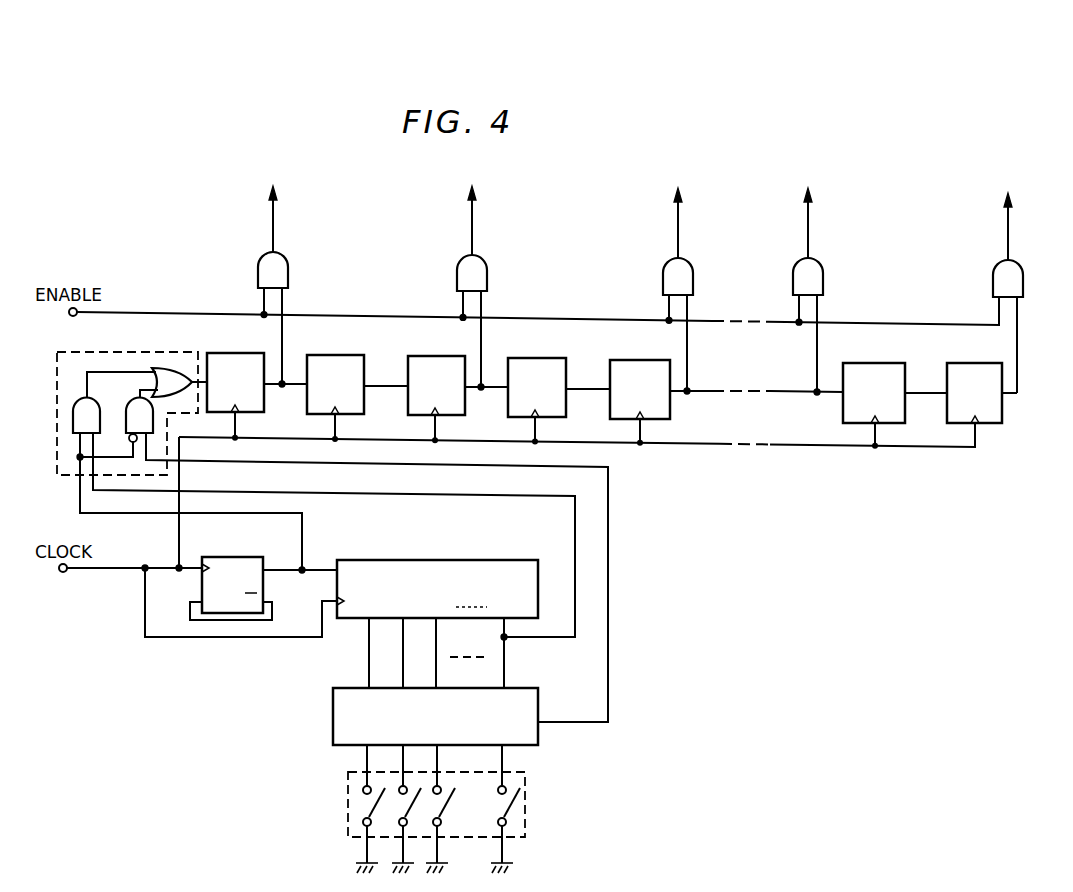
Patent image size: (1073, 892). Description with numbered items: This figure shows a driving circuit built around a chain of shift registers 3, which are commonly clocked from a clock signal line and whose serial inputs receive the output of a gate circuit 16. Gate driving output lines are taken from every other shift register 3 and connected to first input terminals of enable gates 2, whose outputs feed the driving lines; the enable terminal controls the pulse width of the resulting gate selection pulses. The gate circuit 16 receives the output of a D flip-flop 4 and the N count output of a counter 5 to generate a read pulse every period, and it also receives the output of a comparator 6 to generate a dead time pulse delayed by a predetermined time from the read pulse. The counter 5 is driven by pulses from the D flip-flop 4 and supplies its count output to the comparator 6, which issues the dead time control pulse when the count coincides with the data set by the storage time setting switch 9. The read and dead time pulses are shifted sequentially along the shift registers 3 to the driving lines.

The enable gate 2 is at (1023, 280).
The shift register 3 is at (973, 363).
The D flip-flop 4 is at (202, 585).
The counter 5 is at (479, 560).
The comparator 6 is at (333, 706).
The storage time setting switch 9 is at (348, 796).
The gate circuit 16 is at (56, 377).